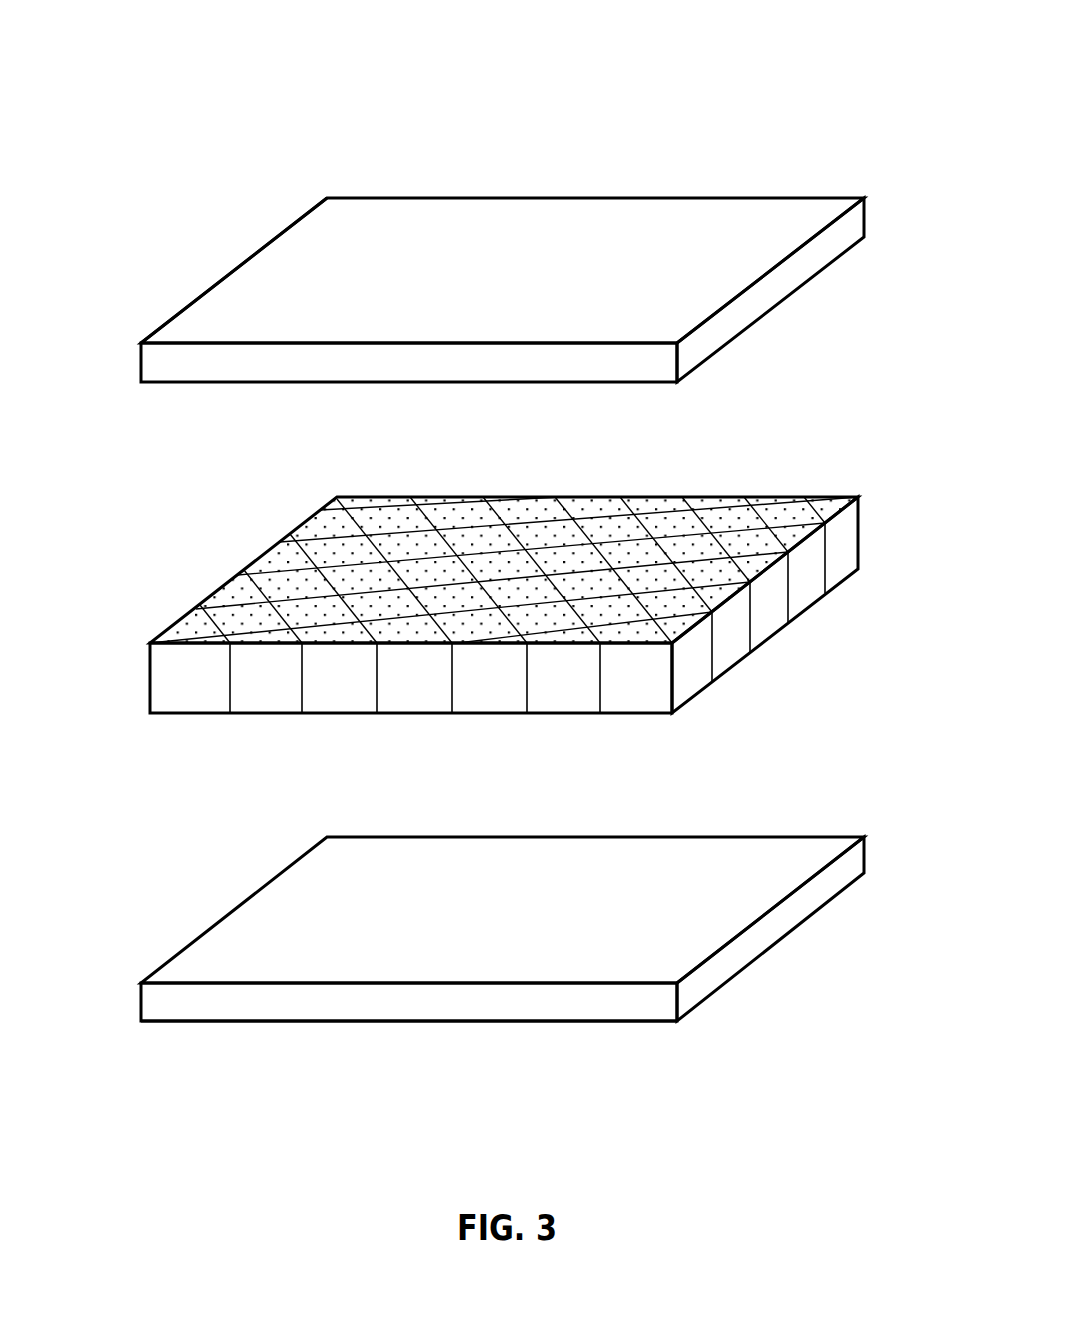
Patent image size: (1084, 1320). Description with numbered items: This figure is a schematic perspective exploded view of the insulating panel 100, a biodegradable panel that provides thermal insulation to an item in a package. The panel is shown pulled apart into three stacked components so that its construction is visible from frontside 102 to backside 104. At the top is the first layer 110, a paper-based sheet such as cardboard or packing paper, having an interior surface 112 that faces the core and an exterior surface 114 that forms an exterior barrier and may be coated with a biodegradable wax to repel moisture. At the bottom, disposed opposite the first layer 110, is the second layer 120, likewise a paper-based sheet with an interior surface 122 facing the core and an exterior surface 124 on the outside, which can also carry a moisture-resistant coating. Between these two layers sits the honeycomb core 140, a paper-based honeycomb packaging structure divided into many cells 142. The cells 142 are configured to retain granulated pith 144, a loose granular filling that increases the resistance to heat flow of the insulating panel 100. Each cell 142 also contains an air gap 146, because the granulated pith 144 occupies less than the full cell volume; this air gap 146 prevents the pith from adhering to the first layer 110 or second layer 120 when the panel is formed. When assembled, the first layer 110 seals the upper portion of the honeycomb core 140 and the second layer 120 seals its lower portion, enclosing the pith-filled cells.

The insulating panel 100 is at (500, 557).
The frontside 102 is at (500, 281).
The backside 104 is at (502, 975).
The first layer 110 is at (835, 240).
The interior surface 112 is at (140, 383).
The exterior surface 114 is at (288, 258).
The second layer 120 is at (712, 967).
The interior surface 122 is at (743, 905).
The exterior surface 124 is at (430, 1025).
The honeycomb core 140 is at (456, 575).
The cells 142 is at (790, 554).
The granulated pith 144 is at (540, 550).
The air gap 146 is at (545, 578).